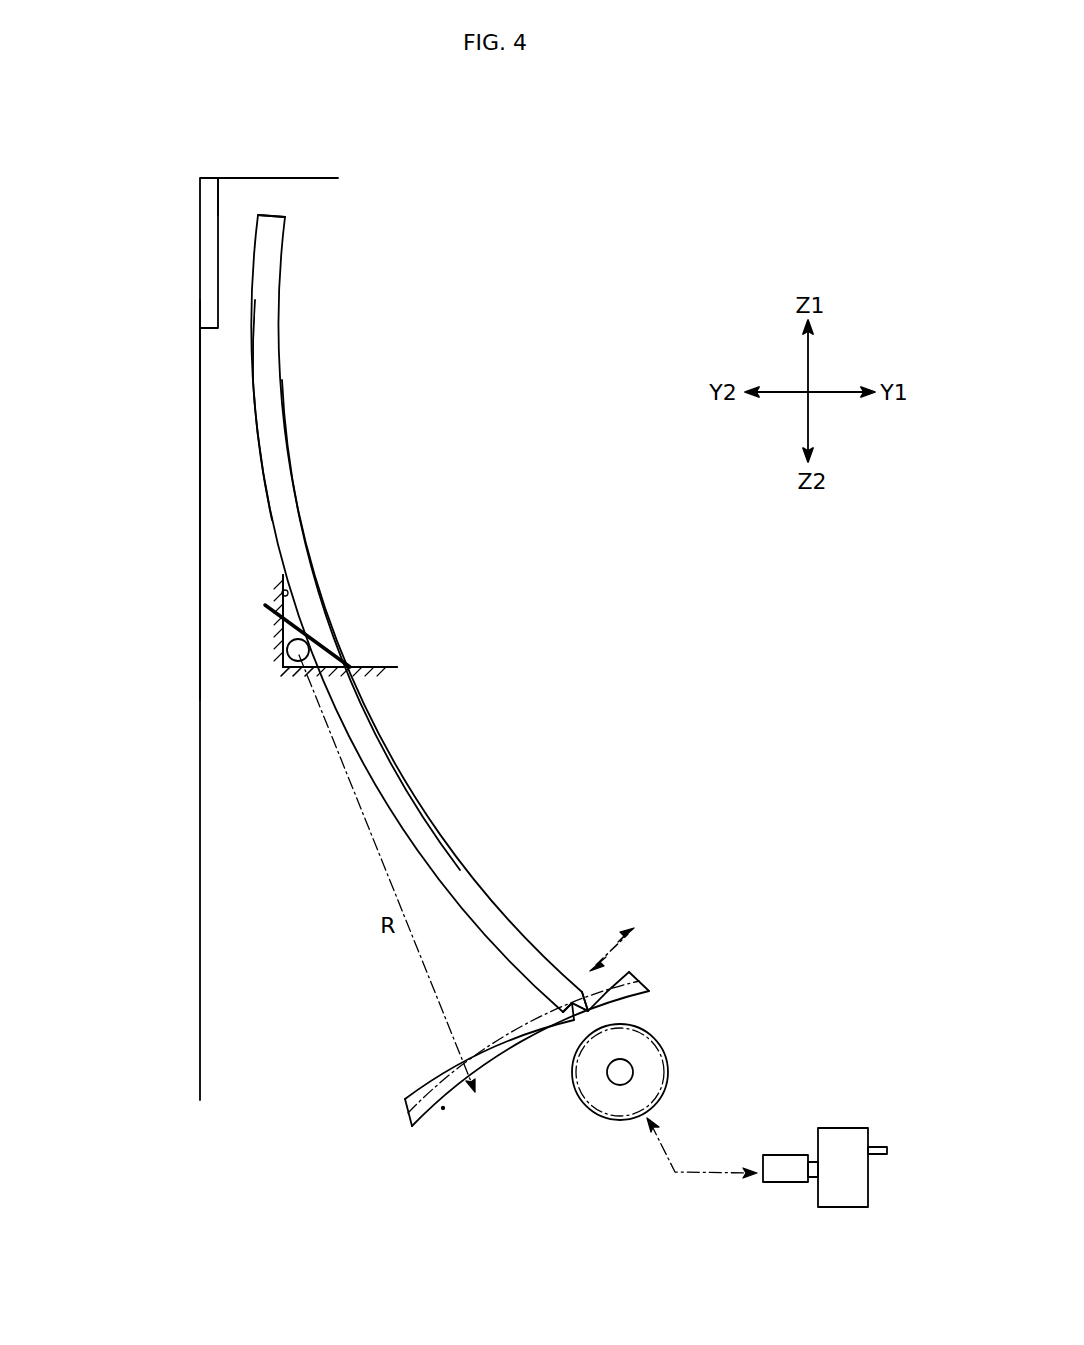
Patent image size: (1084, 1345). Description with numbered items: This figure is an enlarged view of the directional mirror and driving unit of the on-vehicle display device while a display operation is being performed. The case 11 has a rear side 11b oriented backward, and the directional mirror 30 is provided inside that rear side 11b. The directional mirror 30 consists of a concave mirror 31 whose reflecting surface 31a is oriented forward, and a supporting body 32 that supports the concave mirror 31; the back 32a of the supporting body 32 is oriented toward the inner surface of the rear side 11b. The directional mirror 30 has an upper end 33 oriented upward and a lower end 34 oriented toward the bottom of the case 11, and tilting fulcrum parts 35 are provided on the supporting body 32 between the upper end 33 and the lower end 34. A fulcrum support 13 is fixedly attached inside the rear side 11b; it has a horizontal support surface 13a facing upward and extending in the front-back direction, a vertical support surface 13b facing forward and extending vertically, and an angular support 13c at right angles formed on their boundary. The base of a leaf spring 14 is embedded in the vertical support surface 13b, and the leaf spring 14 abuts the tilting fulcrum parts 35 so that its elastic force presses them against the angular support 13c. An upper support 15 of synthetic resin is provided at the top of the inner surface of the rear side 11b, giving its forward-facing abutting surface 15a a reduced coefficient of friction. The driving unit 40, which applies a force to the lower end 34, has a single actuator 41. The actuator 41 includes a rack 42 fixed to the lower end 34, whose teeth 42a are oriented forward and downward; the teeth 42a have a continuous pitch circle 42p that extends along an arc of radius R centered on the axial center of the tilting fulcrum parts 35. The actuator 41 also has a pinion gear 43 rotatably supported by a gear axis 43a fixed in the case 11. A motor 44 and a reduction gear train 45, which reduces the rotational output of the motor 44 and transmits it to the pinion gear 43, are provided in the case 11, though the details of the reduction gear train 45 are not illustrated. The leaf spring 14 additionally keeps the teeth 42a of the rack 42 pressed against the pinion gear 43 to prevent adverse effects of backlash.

The case 11 is at (200, 812).
The rear side 11b is at (198, 460).
The fulcrum support 13 is at (293, 683).
The horizontal support surface 13a is at (386, 666).
The vertical support surface 13b is at (280, 603).
The angular support 13c is at (283, 673).
The leaf spring 14 is at (293, 608).
The upper support 15 is at (210, 263).
The abutting surface 15a is at (220, 213).
The directional mirror 30 is at (272, 517).
The concave mirror 31 is at (298, 493).
The reflecting surface 31a is at (289, 437).
The supporting body 32 is at (270, 420).
The back 32a is at (252, 358).
The upper end 33 is at (270, 223).
The lower end 34 is at (570, 990).
The tilting fulcrum parts 35 is at (290, 651).
The driving unit 40 is at (595, 1119).
The actuator 41 is at (658, 998).
The rack 42 is at (527, 1091).
The teeth 42a is at (514, 1090).
The pitch circle 42p is at (443, 1108).
The pinion gear 43 is at (652, 1067).
The gear axis 43a is at (625, 1077).
The motor 44 is at (838, 1207).
The reduction gear train 45 is at (675, 1172).